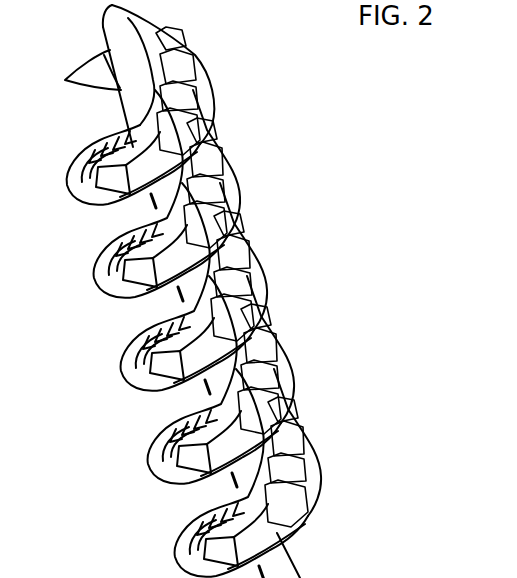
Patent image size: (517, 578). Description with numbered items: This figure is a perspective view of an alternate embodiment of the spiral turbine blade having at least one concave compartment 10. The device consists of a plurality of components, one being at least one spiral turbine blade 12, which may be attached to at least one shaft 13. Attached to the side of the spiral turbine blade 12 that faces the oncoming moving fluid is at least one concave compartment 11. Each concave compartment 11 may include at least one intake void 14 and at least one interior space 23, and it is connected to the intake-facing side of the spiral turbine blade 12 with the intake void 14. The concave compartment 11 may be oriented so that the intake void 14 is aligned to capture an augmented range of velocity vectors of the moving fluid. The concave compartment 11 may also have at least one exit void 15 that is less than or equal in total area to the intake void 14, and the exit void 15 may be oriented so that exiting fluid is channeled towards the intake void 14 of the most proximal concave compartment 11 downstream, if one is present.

The spiral turbine blade having at least one concave compartment 10 is at (262, 48).
The concave compartment 11 is at (173, 133).
The spiral turbine blade 12 is at (233, 197).
The shaft 13 is at (275, 338).
The intake void 14 is at (230, 225).
The exit void 15 is at (250, 297).
The interior space 23 is at (263, 388).